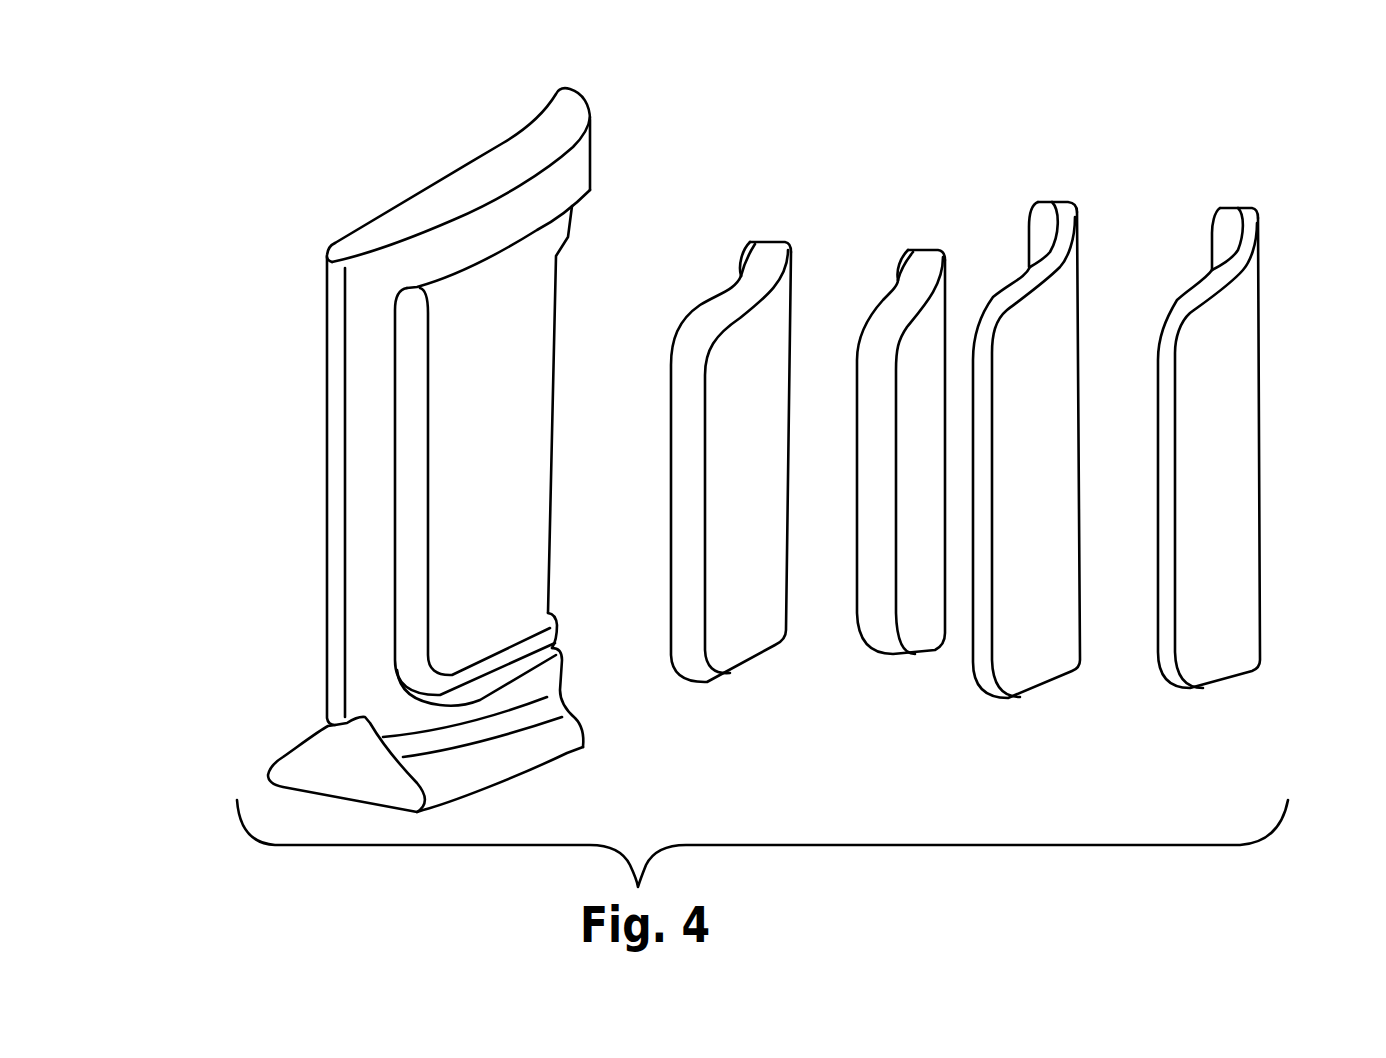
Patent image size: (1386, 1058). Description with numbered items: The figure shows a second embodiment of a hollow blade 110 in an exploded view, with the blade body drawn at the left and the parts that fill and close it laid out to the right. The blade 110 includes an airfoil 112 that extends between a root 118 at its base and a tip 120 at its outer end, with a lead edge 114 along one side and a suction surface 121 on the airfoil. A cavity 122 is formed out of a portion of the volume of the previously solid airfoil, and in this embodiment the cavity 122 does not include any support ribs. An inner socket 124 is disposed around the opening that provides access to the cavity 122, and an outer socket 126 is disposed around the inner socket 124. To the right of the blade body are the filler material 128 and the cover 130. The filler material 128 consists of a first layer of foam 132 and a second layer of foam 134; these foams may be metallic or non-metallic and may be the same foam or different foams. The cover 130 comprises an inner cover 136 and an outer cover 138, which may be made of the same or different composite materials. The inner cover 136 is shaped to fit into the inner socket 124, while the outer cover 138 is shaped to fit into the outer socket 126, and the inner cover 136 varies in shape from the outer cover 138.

The hollow blade 110 is at (276, 221).
The airfoil 112 is at (282, 378).
The lead edge 114 is at (330, 465).
The root 118 is at (553, 753).
The tip 120 is at (507, 170).
The suction surface 121 is at (667, 214).
The cavity 122 is at (507, 440).
The inner socket 124 is at (437, 624).
The outer socket 126 is at (430, 292).
The filler material 128 is at (868, 200).
The cover 130 is at (1186, 174).
The first layer of foam 132 is at (795, 224).
The second layer of foam 134 is at (946, 229).
The inner cover 136 is at (1095, 187).
The outer cover 138 is at (1270, 195).